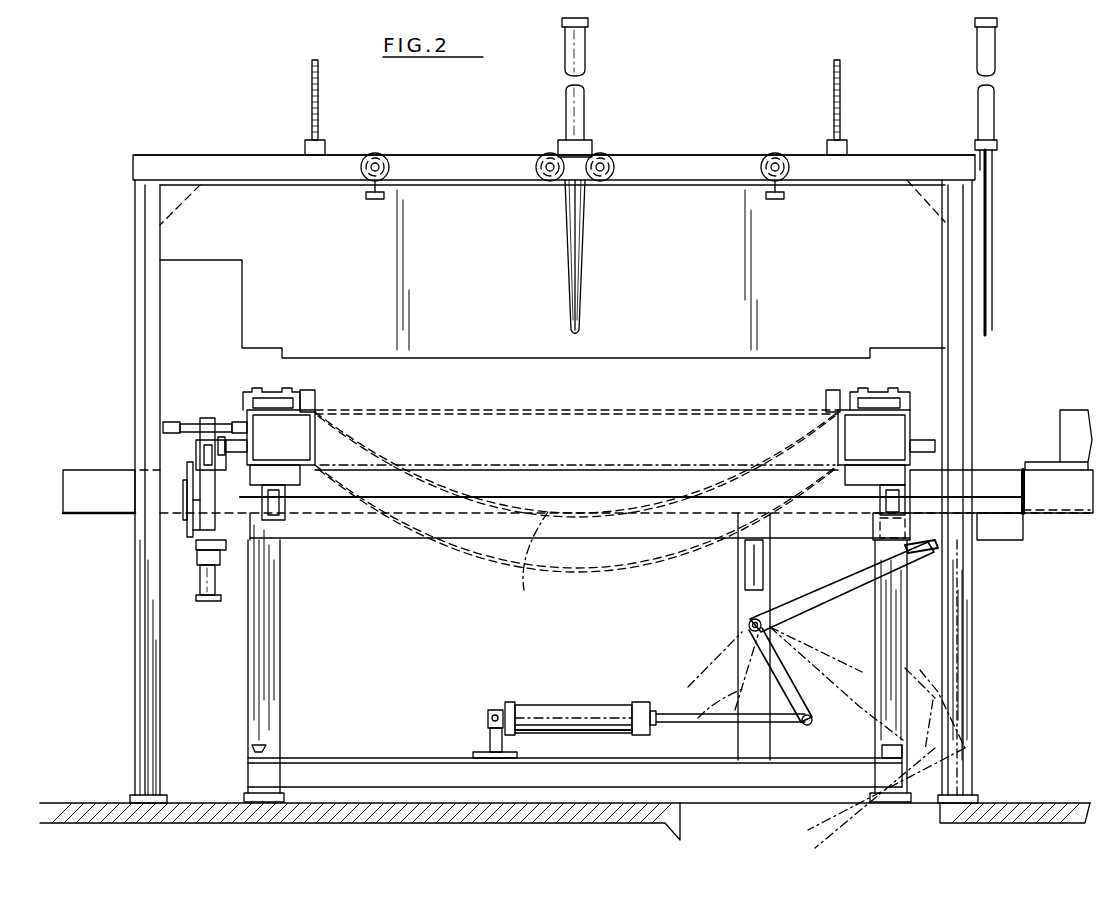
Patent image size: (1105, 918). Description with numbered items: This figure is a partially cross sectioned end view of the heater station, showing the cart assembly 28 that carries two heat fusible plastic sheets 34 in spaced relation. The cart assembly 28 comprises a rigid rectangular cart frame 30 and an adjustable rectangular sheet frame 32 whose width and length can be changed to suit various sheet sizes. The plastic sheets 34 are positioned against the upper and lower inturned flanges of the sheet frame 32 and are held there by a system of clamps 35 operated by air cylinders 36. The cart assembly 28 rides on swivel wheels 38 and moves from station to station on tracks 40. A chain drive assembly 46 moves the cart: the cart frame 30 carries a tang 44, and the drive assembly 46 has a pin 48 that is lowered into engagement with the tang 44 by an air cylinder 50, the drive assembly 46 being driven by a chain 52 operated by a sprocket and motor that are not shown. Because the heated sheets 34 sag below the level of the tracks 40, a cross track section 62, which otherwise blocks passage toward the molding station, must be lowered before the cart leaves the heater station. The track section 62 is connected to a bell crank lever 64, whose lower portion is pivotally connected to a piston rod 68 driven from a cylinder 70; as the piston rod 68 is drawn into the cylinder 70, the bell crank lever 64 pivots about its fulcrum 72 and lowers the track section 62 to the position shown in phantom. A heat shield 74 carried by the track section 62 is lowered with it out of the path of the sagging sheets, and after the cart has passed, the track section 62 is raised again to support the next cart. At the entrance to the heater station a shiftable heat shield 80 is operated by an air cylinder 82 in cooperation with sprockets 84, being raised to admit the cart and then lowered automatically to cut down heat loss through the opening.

The cart assembly 28 is at (560, 425).
The cart frame 30 is at (905, 428).
The sheet frame 32 is at (316, 445).
The heat fusible plastic sheets 34 is at (541, 560).
The clamps 35 is at (317, 410).
The air cylinders 36 is at (265, 396).
The swivel wheels 38 is at (265, 522).
The tracks 40 is at (365, 515).
The tang 44 is at (576, 450).
The drive assembly 46 is at (176, 498).
The pin 48 is at (195, 455).
The air cylinder 50 is at (205, 580).
The chain 52 is at (228, 420).
The track section 62 is at (908, 510).
The bell crank lever 64 is at (800, 597).
The piston rod 68 is at (668, 714).
The cylinder 70 is at (560, 714).
The fulcrum 72 is at (747, 624).
The heat shield 74 is at (967, 618).
The heat shield 80 is at (507, 279).
The air cylinder 82 is at (578, 120).
The sprockets 84 is at (540, 165).